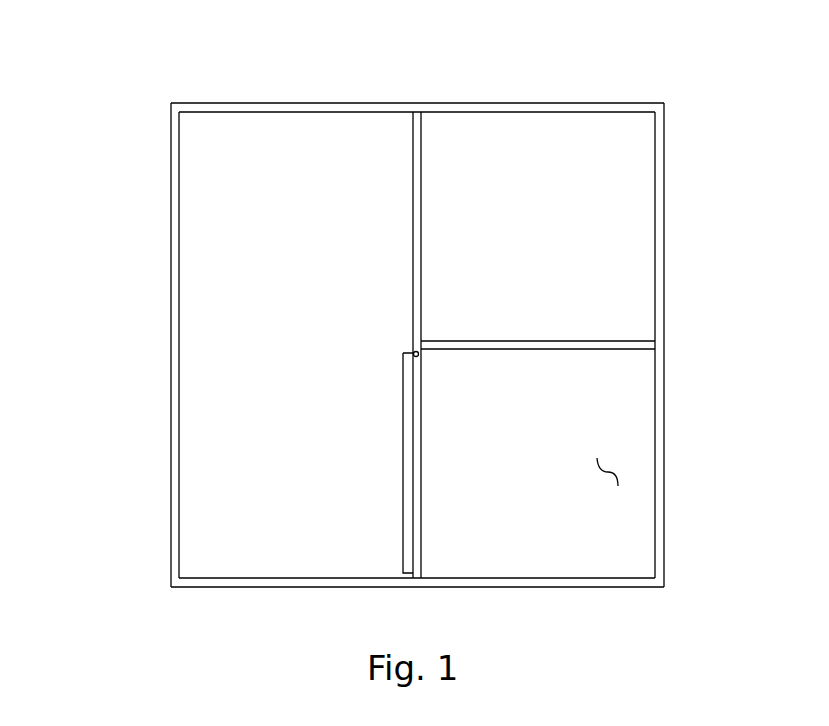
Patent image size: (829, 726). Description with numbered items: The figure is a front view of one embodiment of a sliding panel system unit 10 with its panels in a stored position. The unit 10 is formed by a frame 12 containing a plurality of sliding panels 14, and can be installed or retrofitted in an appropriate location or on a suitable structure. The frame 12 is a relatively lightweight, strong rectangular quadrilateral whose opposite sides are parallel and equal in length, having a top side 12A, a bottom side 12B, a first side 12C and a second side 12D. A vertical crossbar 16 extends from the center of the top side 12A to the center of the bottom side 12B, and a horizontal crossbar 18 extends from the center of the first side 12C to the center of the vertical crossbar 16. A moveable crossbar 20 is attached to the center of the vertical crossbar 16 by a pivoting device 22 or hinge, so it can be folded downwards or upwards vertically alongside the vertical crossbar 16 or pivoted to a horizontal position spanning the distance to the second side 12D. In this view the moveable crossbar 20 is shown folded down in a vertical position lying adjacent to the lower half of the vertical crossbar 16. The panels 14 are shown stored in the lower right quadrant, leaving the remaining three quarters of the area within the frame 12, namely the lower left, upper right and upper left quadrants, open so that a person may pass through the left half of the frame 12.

The sliding panel system unit 10 is at (140, 80).
The frame 12 is at (664, 200).
The top side 12A is at (548, 103).
The bottom side 12B is at (528, 587).
The first side 12C is at (664, 308).
The second side 12D is at (171, 307).
The sliding panels 14 is at (608, 467).
The vertical crossbar 16 is at (413, 162).
The horizontal crossbar 18 is at (523, 341).
The moveable crossbar 20 is at (403, 447).
The pivoting device 22 is at (413, 351).